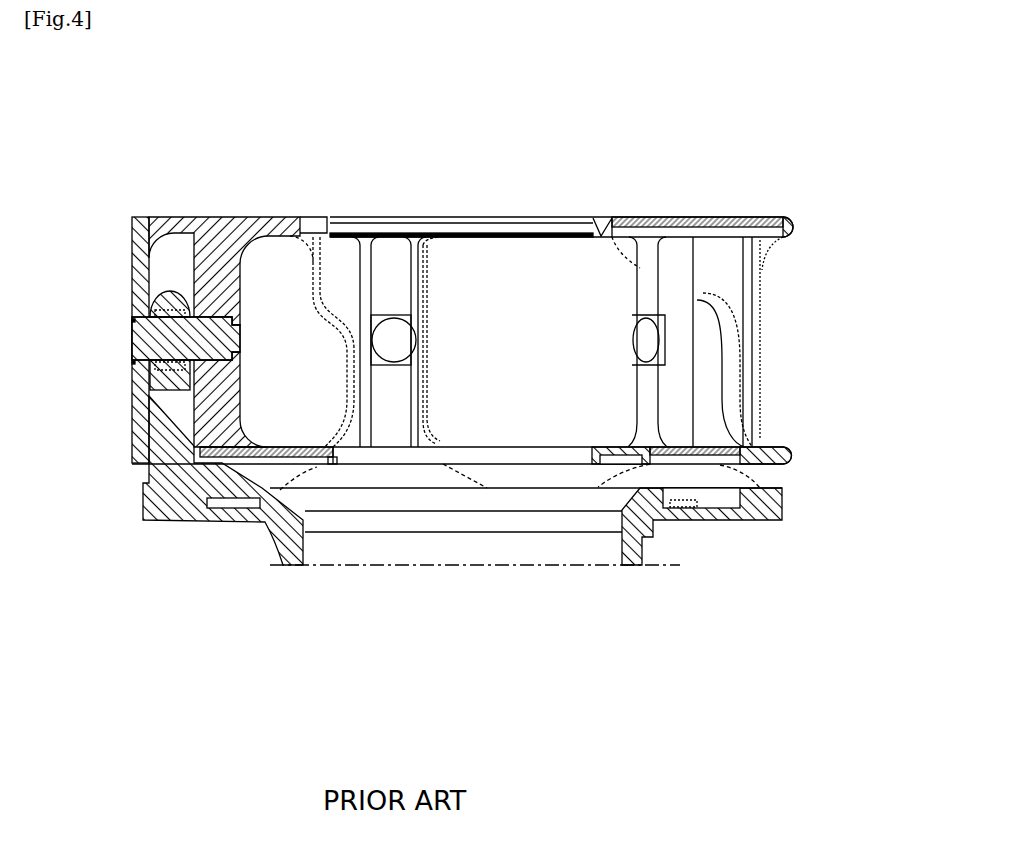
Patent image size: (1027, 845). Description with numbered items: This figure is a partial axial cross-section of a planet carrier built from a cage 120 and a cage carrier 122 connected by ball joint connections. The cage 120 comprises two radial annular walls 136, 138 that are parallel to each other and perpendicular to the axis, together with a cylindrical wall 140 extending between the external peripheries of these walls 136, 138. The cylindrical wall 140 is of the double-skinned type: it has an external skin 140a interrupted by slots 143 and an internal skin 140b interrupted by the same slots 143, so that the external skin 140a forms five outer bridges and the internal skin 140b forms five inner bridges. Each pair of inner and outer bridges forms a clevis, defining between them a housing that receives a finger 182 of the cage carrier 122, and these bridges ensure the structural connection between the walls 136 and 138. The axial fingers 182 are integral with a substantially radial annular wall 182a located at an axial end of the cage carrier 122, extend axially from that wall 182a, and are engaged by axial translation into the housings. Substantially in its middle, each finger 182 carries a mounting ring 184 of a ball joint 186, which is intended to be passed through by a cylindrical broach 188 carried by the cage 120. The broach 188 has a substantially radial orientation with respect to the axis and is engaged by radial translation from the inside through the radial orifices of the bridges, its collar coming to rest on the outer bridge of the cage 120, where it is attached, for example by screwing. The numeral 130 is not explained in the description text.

The cage 120 is at (754, 192).
The cage carrier 122 is at (661, 556).
The rotor 130 is at (776, 274).
The radial annular wall 136 is at (772, 462).
The radial annular wall 138 is at (693, 232).
The cylindrical wall 140 is at (770, 330).
The external skin 140a is at (758, 352).
The internal skin 140b is at (602, 236).
The slot 143 is at (522, 342).
The finger 182 is at (737, 385).
The radial annular wall 182a is at (774, 514).
The mounting ring 184 is at (134, 354).
The ball joint 186 is at (140, 299).
The cylindrical broach 188 is at (133, 340).